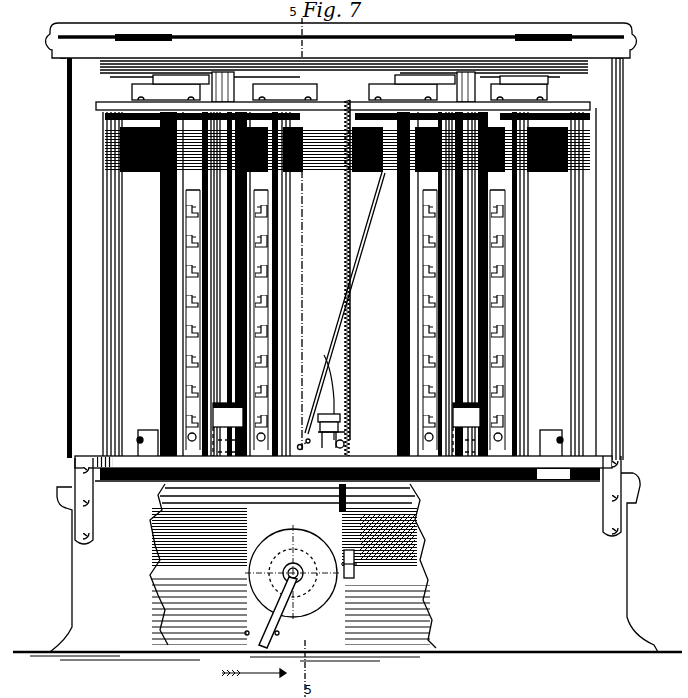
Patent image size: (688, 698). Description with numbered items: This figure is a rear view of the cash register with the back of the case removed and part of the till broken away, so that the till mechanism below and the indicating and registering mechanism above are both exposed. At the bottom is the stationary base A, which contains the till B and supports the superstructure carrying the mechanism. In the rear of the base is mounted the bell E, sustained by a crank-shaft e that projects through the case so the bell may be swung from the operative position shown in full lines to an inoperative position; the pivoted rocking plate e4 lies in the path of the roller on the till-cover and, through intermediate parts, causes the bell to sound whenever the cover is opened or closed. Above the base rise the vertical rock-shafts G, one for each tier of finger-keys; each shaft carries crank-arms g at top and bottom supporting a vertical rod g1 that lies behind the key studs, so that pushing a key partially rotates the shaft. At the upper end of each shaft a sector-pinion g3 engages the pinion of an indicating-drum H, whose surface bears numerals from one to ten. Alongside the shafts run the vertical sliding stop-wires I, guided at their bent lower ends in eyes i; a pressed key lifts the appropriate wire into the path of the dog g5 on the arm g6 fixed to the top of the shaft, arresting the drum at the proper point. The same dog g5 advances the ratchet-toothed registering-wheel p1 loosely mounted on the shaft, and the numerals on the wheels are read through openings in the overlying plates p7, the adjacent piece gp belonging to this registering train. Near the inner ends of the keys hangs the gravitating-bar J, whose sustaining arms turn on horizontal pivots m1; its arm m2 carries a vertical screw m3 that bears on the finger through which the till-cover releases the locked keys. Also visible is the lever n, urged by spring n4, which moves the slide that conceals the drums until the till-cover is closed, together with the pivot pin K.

The overlying plates p7 is at (339, 92).
The dog g5 is at (228, 74).
The arm g6 is at (192, 62).
The registering-wheel p1 is at (320, 62).
The pawl plate gp is at (535, 100).
The sector-pinion g3 is at (104, 135).
The crank-arms g is at (306, 112).
The indicating-drum H is at (143, 172).
The rock-shaft G is at (165, 270).
The eyes i is at (186, 315).
The stop-wires I is at (300, 298).
The lever n is at (345, 303).
The spring n4 is at (338, 372).
The vertical screw m3 is at (340, 405).
The arm m2 is at (340, 432).
The pivot pin K is at (331, 444).
The vertical rod g1 is at (196, 183).
The gravitating-bar J is at (185, 398).
The horizontal pivots m1 is at (143, 440).
The stationary base A is at (347, 558).
The till B is at (293, 566).
The bell E is at (293, 573).
The crank-shaft e is at (305, 653).
The rocking plate e4 is at (357, 578).